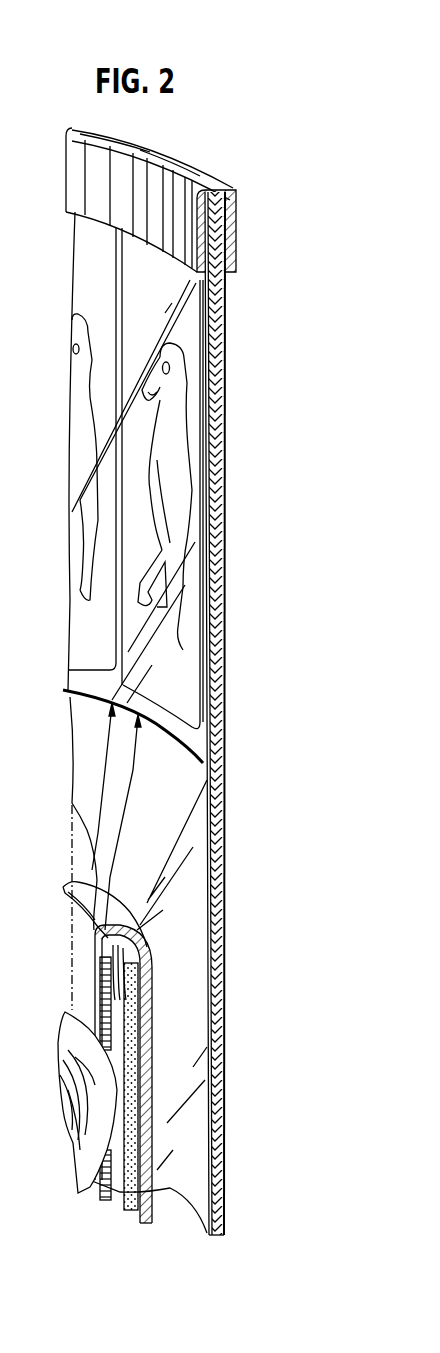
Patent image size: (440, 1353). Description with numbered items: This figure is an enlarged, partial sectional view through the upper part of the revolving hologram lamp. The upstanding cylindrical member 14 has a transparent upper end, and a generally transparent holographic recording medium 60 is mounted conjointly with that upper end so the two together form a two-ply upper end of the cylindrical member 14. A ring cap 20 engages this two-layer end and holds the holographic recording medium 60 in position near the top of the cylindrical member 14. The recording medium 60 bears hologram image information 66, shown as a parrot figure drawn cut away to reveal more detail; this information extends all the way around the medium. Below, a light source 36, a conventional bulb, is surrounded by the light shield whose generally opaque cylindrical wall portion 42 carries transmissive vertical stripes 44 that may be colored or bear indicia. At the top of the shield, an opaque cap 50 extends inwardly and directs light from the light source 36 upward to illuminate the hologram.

The ring cap 20 is at (75, 178).
The cylindrical member 14 is at (225, 633).
The hologram image information 66 is at (178, 488).
The holographic recording medium 60 is at (192, 738).
The cap 50 is at (64, 887).
The light source 36 is at (65, 1033).
The transmissive vertical stripes 44 is at (137, 1052).
The cylindrical wall portion 42 is at (153, 1073).